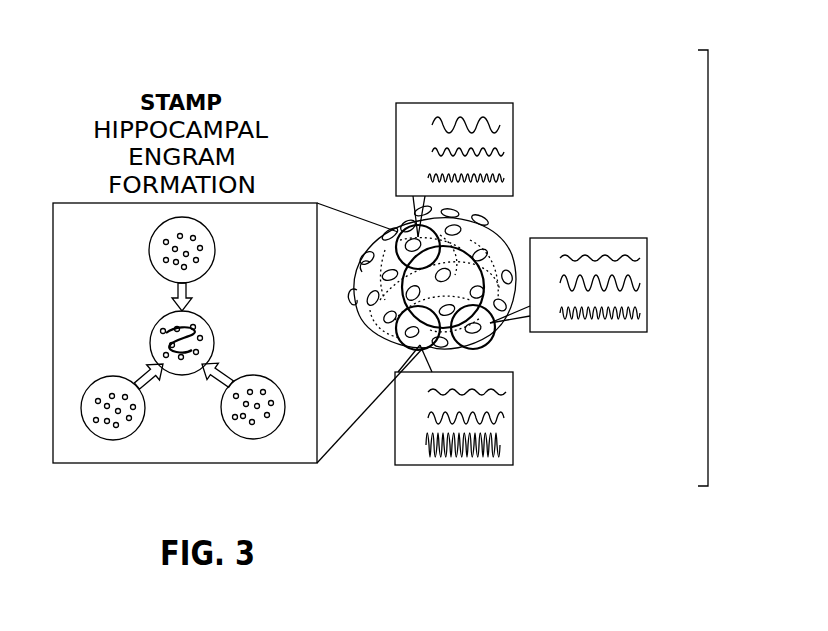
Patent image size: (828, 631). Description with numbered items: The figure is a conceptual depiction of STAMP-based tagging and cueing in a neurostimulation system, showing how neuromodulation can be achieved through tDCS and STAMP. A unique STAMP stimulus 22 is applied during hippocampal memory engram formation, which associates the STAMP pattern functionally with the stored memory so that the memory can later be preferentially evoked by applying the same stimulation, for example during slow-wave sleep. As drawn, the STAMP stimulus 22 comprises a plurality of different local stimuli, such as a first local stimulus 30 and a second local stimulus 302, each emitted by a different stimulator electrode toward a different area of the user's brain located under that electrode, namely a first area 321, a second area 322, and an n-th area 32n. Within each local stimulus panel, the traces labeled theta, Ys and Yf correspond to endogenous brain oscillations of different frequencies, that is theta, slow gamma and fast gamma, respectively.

The STAMP stimulus 22 is at (720, 268).
The local stimulus 30 is at (497, 68).
The local stimulus 302 is at (595, 205).
The area of the brain 321 is at (402, 230).
The area of the brain 322 is at (497, 332).
The area of the brain 32n is at (405, 352).